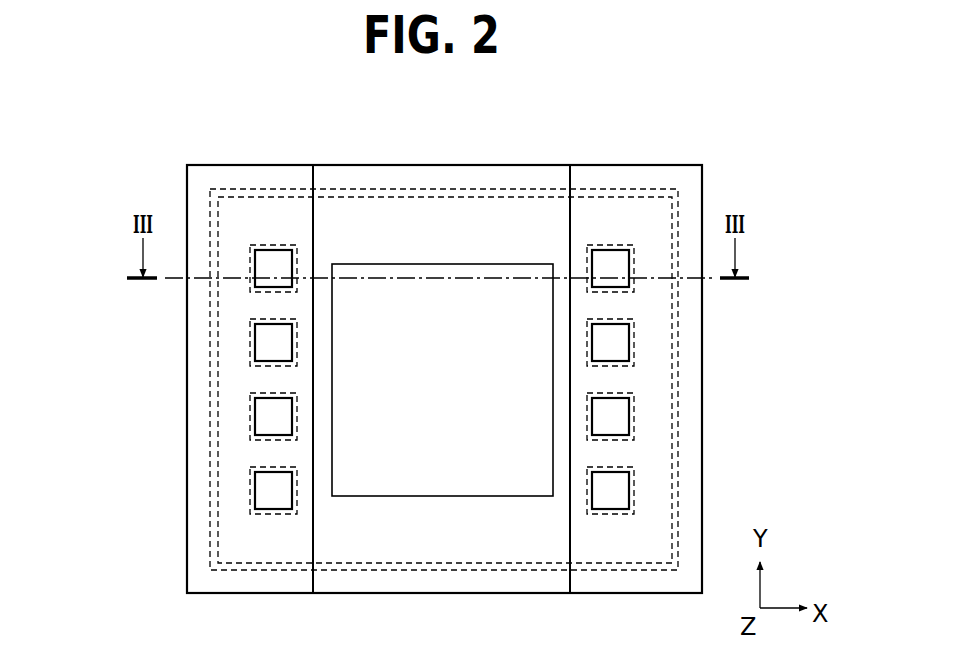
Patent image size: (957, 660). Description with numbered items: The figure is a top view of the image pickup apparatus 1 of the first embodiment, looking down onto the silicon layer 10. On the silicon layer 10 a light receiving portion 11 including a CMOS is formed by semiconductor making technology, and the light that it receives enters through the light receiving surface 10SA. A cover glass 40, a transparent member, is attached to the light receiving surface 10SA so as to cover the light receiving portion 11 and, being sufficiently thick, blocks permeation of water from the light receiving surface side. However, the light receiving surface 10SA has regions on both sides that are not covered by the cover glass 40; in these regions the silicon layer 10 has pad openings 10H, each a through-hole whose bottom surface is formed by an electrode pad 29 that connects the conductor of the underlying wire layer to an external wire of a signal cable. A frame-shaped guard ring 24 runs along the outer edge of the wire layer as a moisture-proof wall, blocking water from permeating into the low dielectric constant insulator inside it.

The image pickup apparatus 1 is at (130, 182).
The silicon layer 10 is at (248, 165).
The cover glass 40 is at (428, 165).
The light receiving surface 10SA is at (633, 218).
The pad opening 10H is at (613, 405).
The electrode pad 29 is at (638, 483).
The guard ring 24 is at (683, 510).
The light receiving portion 11 is at (470, 497).